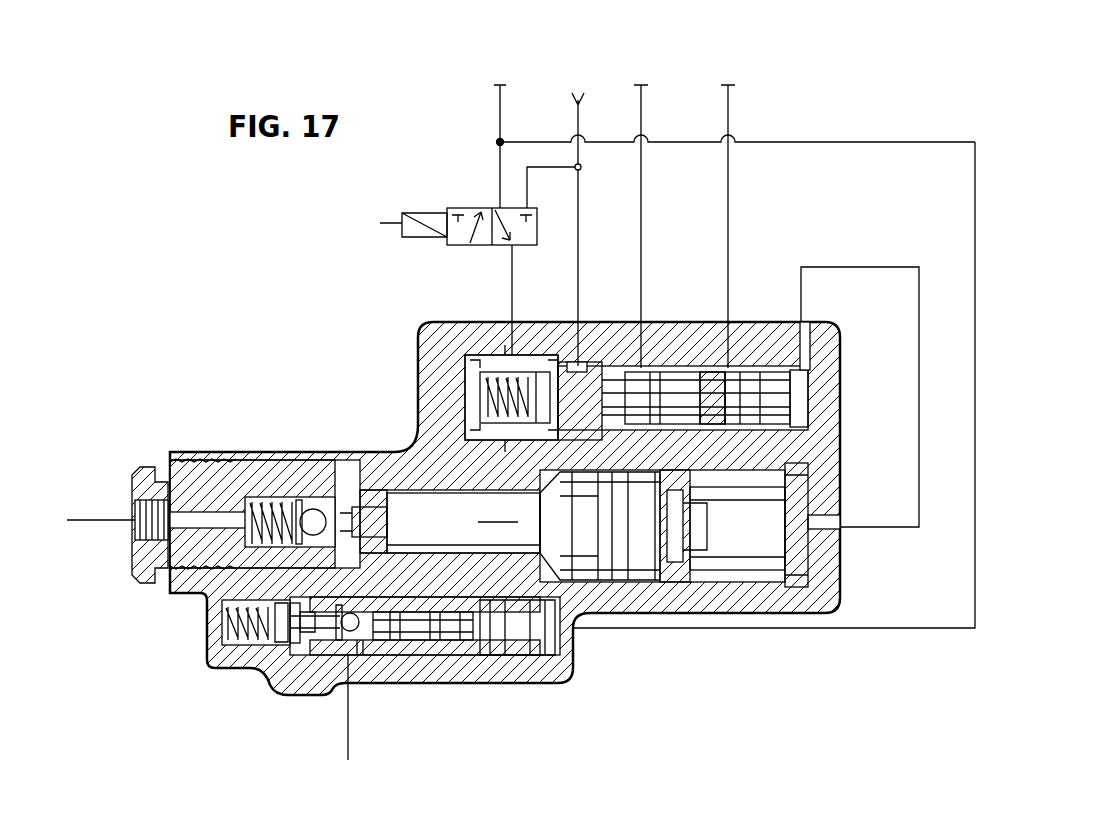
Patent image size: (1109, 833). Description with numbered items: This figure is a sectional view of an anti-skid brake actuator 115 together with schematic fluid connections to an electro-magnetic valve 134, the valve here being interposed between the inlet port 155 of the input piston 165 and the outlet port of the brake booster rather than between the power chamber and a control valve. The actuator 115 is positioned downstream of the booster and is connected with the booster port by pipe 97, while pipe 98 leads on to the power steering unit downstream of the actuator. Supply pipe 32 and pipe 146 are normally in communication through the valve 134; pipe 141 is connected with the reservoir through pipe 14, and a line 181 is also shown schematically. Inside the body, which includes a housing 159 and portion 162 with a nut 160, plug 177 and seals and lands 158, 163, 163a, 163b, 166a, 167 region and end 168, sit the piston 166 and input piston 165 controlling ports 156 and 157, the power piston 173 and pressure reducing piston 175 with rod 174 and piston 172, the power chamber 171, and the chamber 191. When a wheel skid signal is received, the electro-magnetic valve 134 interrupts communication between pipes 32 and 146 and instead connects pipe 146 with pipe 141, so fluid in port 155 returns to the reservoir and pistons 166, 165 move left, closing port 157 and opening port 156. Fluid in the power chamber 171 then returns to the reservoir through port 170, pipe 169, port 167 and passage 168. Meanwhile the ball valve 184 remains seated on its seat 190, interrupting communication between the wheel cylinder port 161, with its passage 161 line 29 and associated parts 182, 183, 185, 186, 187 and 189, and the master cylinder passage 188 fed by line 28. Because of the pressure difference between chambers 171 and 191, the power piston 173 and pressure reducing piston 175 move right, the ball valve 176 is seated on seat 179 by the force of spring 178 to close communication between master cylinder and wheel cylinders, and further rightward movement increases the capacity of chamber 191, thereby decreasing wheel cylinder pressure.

The pipe 14 is at (578, 110).
The input line 28 is at (100, 526).
The signal line 29 is at (350, 765).
The pipe 32 is at (498, 103).
The pipe 97 is at (641, 112).
The pipe 98 is at (728, 112).
The actuator 115 is at (285, 290).
The electro-magnetic valve 134 is at (436, 197).
The pipe 141 is at (527, 195).
The pipe 146 is at (512, 263).
The inlet port 155 is at (510, 340).
The port 156 is at (575, 330).
The port 157 is at (632, 340).
The land 158 is at (722, 372).
The housing 159 is at (825, 470).
The nut 160 is at (140, 512).
The port 161 is at (352, 700).
The housing portion 162 is at (432, 405).
The land 163 is at (690, 372).
The groove 163a is at (662, 372).
The groove 163b is at (600, 372).
The input piston 165 is at (532, 370).
The piston 166 is at (735, 388).
The groove 166a is at (648, 350).
The port 167 is at (805, 330).
The passage 168 is at (800, 398).
The pipe 169 is at (900, 400).
The port 170 is at (828, 522).
The power chamber 171 is at (768, 487).
The piston 172 is at (703, 470).
The power piston 173 is at (613, 470).
The rod 174 is at (400, 492).
The pressure reducing piston 175 is at (463, 523).
The ball valve 176 is at (290, 500).
The threaded plug 177 is at (200, 487).
The spring 178 is at (247, 487).
The seat 179 is at (310, 510).
The conduit 181 is at (975, 325).
The port 182 is at (578, 640).
The pilot spool 183 is at (430, 655).
The ball valve 184 is at (348, 640).
The spring 185 is at (235, 625).
The seat 186 is at (295, 640).
The passage 187 is at (363, 655).
The passage 188 is at (300, 597).
The sleeve 189 is at (405, 660).
The seat 190 is at (338, 633).
The chamber 191 is at (362, 505).